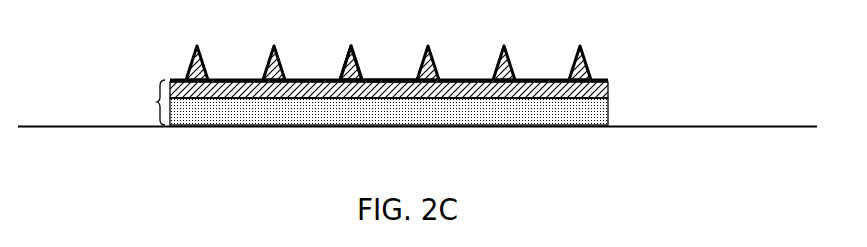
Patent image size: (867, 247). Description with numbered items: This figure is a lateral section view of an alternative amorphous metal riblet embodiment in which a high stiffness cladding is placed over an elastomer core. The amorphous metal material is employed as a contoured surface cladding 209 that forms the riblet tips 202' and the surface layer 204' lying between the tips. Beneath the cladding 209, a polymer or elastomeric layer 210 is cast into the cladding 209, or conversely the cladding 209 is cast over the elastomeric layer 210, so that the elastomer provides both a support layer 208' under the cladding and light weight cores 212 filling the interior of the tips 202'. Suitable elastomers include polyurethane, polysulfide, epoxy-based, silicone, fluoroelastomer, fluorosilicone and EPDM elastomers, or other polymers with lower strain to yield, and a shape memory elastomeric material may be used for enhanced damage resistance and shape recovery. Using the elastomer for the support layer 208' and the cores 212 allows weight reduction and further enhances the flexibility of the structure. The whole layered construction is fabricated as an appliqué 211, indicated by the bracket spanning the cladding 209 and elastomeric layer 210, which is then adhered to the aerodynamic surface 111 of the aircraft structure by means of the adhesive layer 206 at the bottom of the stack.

The surface 111 is at (47, 128).
The adhesive layer 206 is at (597, 119).
The support layer 208' is at (389, 125).
The elastomeric layer 210 is at (608, 91).
The contoured surface cladding 209 is at (608, 83).
The surface layer 204' is at (424, 43).
The tips 202' is at (388, 47).
The light weight cores 212 is at (347, 72).
The appliqué 211 is at (157, 102).